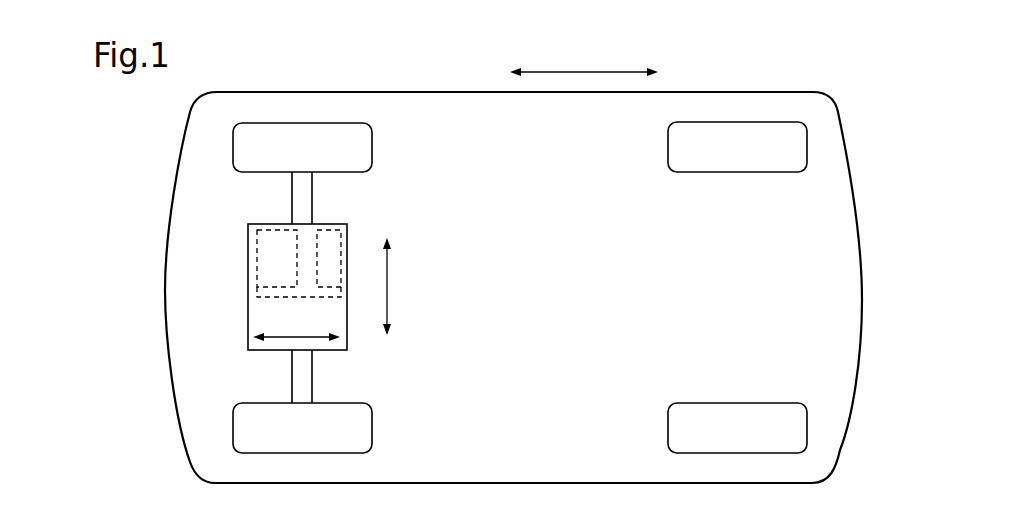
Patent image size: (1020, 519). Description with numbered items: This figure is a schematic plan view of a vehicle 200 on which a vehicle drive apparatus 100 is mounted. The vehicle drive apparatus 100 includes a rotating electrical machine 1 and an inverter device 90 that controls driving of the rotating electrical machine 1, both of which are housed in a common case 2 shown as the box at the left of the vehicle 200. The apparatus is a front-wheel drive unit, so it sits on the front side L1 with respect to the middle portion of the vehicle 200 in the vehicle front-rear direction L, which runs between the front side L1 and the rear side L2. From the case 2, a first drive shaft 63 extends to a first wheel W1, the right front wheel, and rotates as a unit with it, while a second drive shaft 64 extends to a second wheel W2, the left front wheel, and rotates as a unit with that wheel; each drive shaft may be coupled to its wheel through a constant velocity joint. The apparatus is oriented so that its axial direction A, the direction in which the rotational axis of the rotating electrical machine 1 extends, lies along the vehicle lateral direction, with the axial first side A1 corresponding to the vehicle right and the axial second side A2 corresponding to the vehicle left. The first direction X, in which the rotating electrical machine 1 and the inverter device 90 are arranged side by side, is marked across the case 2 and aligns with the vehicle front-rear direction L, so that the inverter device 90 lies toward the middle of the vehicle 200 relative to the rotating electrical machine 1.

The rotating electrical machine 1 is at (248, 247).
The case 2 is at (253, 322).
The first drive shaft 63 is at (312, 192).
The second drive shaft 64 is at (312, 387).
The inverter device 90 is at (252, 298).
The vehicle drive apparatus 100 is at (230, 216).
The vehicle 200 is at (790, 91).
The first wheel W1 is at (367, 142).
The second wheel W2 is at (366, 432).
The first direction X is at (282, 341).
The axial direction A is at (399, 286).
The axial first side A1 is at (386, 226).
The axial second side A2 is at (385, 353).
The vehicle front-rear direction L is at (584, 57).
The front side L1 is at (490, 72).
The rear side L2 is at (679, 72).